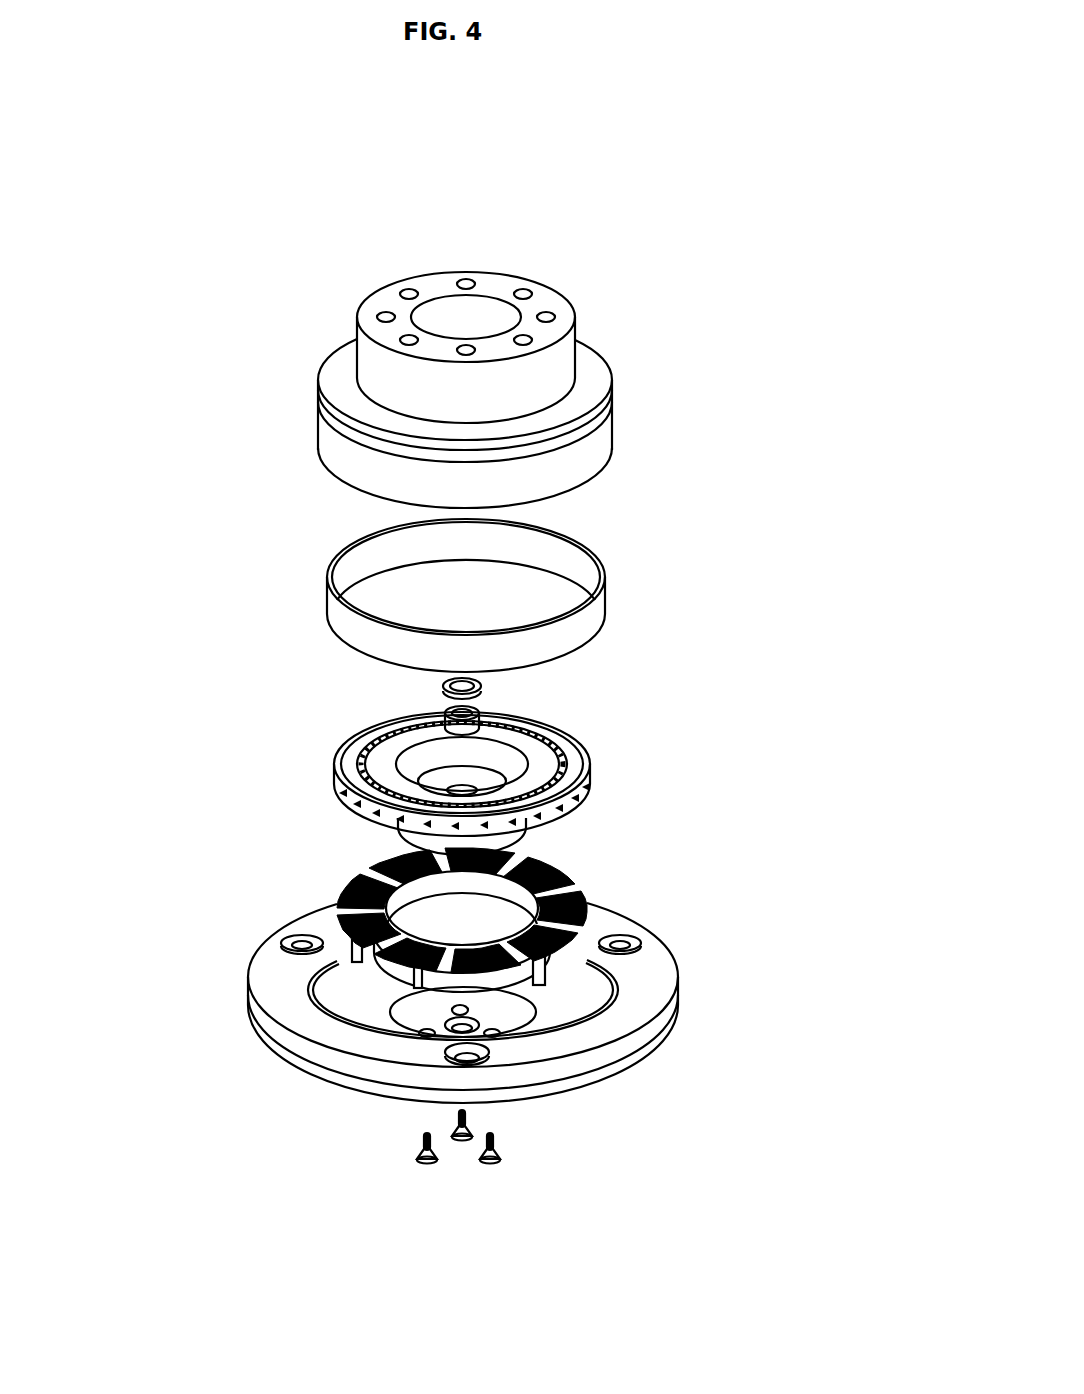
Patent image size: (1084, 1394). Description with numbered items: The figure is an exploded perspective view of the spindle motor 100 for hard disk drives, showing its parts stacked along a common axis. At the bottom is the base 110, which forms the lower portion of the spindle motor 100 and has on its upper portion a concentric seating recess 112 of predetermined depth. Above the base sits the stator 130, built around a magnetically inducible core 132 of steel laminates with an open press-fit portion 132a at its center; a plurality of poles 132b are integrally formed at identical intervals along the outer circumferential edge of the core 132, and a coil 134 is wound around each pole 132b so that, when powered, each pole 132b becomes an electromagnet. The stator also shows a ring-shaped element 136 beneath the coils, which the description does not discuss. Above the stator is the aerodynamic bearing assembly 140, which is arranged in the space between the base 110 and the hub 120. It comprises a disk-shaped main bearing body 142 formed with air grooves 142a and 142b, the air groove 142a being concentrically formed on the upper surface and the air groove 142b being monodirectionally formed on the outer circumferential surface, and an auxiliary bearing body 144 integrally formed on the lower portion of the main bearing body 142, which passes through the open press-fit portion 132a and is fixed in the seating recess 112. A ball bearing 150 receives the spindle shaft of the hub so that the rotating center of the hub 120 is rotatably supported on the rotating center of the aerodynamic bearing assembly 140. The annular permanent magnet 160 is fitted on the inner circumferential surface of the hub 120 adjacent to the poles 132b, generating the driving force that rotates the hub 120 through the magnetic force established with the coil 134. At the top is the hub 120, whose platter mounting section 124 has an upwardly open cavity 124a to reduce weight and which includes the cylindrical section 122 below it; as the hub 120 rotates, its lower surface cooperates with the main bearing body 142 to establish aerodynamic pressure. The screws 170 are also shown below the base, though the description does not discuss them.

The spindle motor 100 is at (790, 718).
The base 110 is at (686, 1010).
The seating recess 112 is at (420, 997).
The hub 120 is at (620, 405).
The cylindrical section 122 is at (595, 448).
The platter mounting section 124 is at (568, 357).
The cavity 124a is at (467, 335).
The stator 130 is at (596, 917).
The core 132 is at (347, 885).
The open press-fit portion 132a is at (446, 933).
The poles 132b is at (578, 952).
The coil 134 is at (360, 916).
The insulator ring 136 is at (562, 872).
The aerodynamic bearing assembly 140 is at (575, 820).
The main bearing body 142 is at (590, 766).
The air groove 142a is at (360, 747).
The air groove 142b is at (337, 790).
The auxiliary bearing body 144 is at (390, 858).
The ball bearing 150 is at (490, 712).
The annular permanent magnet 160 is at (595, 605).
The screws 170 is at (540, 1100).